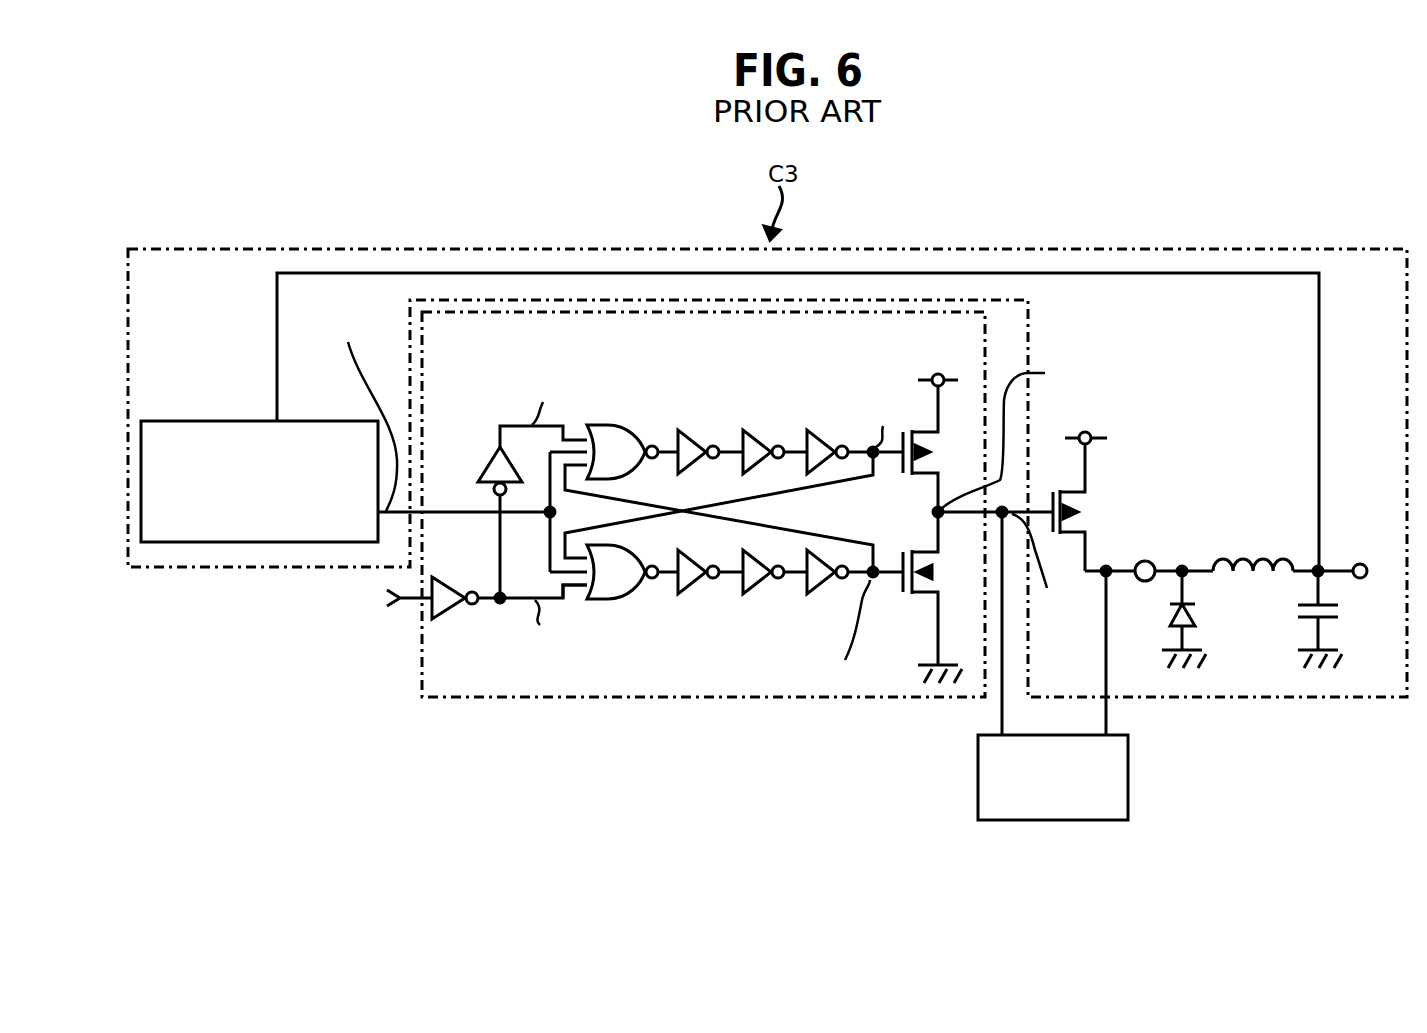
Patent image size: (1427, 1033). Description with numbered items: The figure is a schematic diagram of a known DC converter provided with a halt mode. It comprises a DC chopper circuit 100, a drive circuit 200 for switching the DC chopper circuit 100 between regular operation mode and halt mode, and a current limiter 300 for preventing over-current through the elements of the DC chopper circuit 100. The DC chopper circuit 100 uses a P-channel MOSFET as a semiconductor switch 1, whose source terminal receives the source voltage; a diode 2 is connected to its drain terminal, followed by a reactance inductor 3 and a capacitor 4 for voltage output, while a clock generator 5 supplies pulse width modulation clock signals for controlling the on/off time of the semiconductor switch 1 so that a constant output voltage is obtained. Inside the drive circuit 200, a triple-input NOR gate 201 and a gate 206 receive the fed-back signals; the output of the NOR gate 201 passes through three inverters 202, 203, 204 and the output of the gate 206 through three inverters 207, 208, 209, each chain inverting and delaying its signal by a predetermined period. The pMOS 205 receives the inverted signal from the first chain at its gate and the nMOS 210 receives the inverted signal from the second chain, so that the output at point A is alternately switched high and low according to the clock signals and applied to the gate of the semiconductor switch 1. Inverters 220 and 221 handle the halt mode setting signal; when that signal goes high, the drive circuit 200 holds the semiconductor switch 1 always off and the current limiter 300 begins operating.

The semiconductor switch 1 is at (1075, 518).
The diode 2 is at (1195, 612).
The reactance inductor 3 is at (1260, 556).
The capacitor 4 is at (1340, 612).
The clock generator 5 is at (160, 421).
The DC chopper circuit 100 is at (1371, 247).
The drive circuit 200 is at (530, 700).
The triple-input NOR gate 201 is at (606, 426).
The inverter 202 is at (692, 430).
The inverter 203 is at (757, 430).
The inverter 204 is at (821, 430).
The pMOS 205 is at (905, 478).
The NAND gate 206 is at (605, 600).
The inverter 207 is at (692, 596).
The inverter 208 is at (757, 596).
The inverter 209 is at (821, 596).
The nMOS 210 is at (905, 595).
The inverter 220 is at (455, 619).
The inverter 221 is at (480, 460).
The current limiter 300 is at (1128, 758).